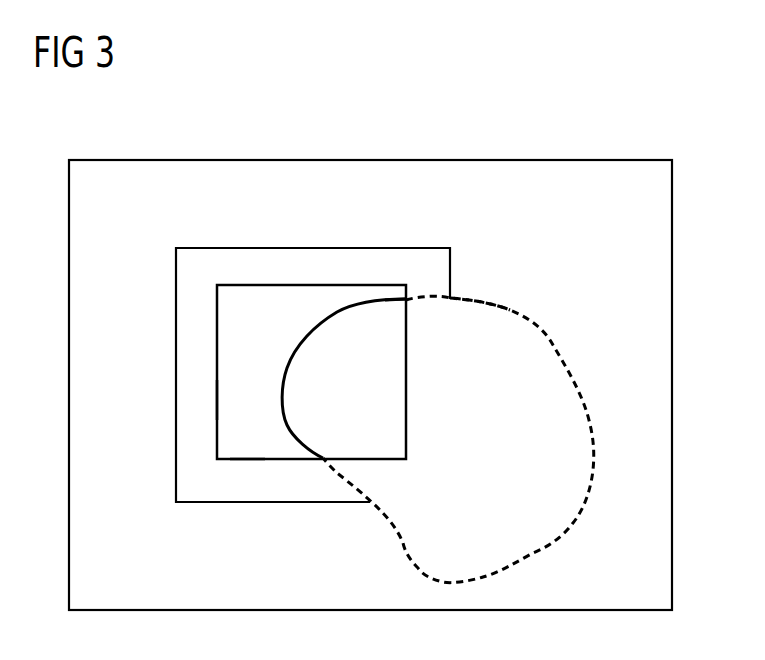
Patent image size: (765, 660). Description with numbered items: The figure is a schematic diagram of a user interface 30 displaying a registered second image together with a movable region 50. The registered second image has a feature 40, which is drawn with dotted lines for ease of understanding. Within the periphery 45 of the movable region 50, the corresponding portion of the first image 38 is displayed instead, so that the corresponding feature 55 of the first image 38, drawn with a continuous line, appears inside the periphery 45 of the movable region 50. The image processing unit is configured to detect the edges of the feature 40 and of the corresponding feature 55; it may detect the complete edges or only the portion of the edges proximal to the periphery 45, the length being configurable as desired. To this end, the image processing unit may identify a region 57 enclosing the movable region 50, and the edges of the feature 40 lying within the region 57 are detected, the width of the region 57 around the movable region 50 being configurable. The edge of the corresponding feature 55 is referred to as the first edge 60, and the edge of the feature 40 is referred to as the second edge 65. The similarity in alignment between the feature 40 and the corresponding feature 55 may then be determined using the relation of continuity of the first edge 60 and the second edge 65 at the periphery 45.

The user interface 30 is at (400, 130).
The region 57 is at (192, 266).
The first image 38 is at (272, 297).
The corresponding feature 55 is at (363, 318).
The first edge 60 is at (395, 300).
The second edge 65 is at (430, 302).
The feature 40 is at (566, 452).
The movable region 50 is at (210, 398).
The periphery 45 is at (247, 460).